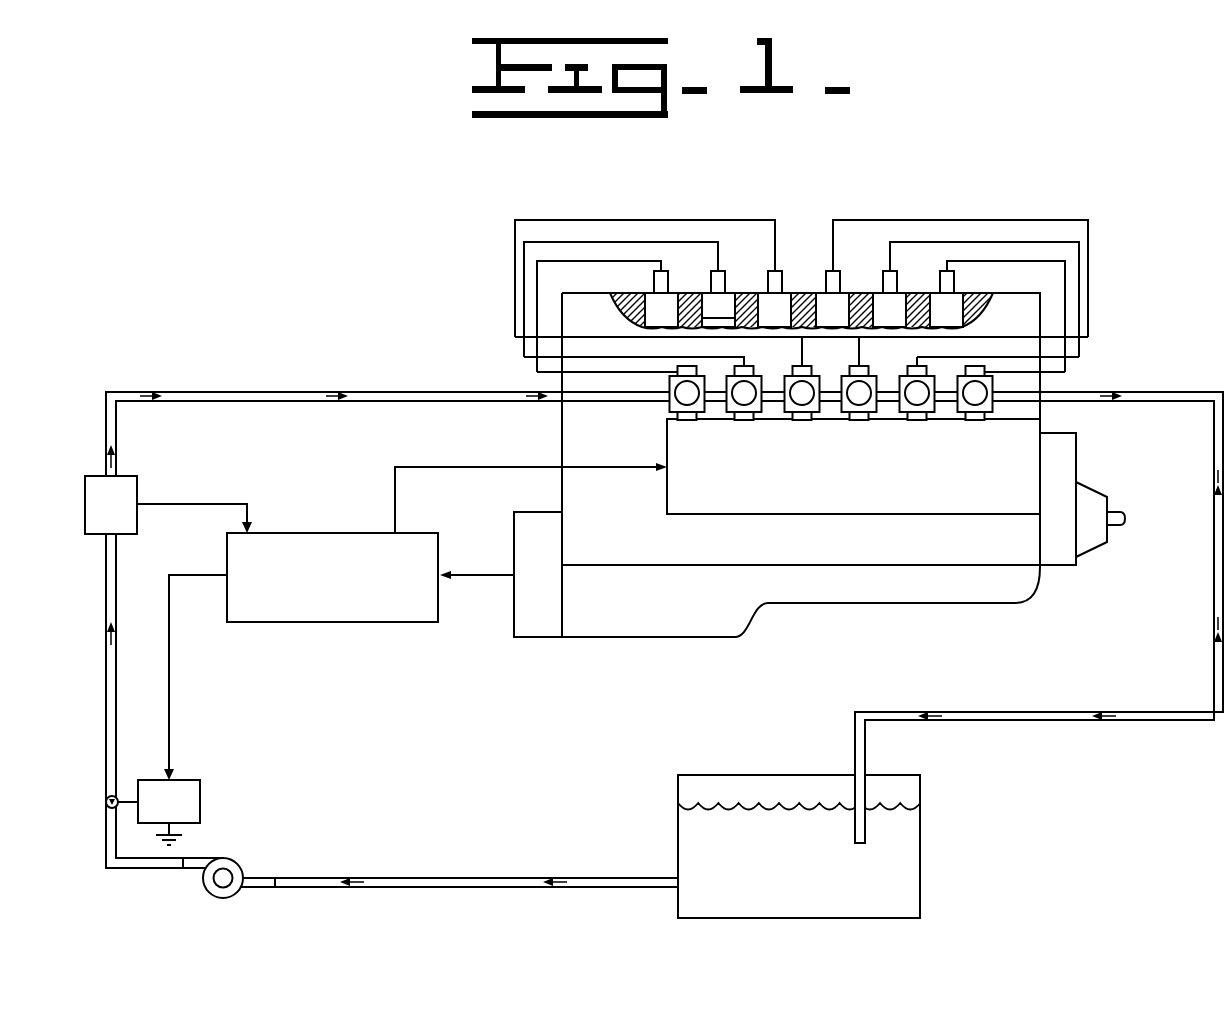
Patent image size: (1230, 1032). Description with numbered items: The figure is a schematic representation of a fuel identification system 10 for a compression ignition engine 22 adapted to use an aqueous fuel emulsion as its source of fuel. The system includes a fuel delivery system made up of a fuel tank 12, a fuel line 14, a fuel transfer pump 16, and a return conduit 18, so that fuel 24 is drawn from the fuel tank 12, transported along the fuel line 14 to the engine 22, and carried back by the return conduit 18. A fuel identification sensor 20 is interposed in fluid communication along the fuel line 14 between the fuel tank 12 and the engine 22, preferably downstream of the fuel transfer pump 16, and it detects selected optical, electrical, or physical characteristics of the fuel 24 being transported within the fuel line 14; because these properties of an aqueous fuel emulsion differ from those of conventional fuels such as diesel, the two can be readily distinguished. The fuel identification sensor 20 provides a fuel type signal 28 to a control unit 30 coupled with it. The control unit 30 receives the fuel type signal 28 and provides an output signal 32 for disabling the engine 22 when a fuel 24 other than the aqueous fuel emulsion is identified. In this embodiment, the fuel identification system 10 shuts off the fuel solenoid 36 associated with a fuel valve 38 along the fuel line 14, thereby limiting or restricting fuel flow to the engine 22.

The fuel identification system 10 is at (112, 208).
The fuel tank 12 is at (787, 775).
The fuel line 14 is at (381, 392).
The fuel transfer pump 16 is at (234, 865).
The return conduit 18 is at (1112, 720).
The fuel identification sensor 20 is at (103, 477).
The engine 22 is at (965, 597).
The fuel 24 is at (111, 608).
The fuel type signal 28 is at (200, 504).
The control unit 30 is at (298, 533).
The output signal 32 is at (170, 700).
The fuel solenoid 36 is at (200, 802).
The fuel valve 38 is at (107, 804).